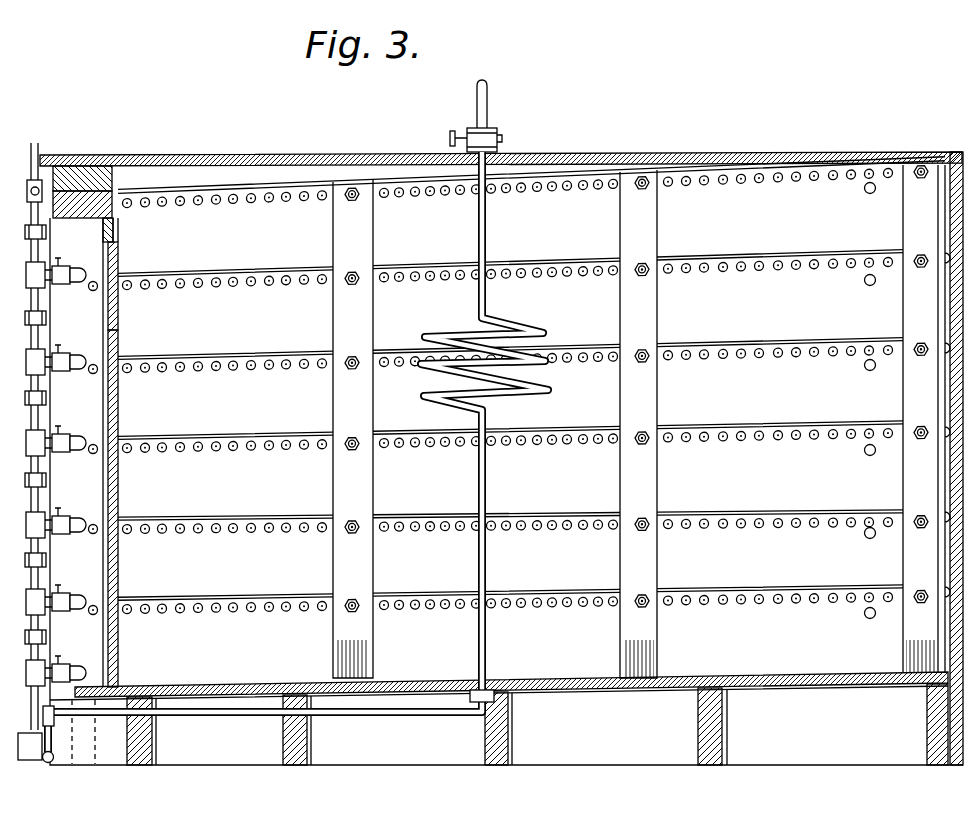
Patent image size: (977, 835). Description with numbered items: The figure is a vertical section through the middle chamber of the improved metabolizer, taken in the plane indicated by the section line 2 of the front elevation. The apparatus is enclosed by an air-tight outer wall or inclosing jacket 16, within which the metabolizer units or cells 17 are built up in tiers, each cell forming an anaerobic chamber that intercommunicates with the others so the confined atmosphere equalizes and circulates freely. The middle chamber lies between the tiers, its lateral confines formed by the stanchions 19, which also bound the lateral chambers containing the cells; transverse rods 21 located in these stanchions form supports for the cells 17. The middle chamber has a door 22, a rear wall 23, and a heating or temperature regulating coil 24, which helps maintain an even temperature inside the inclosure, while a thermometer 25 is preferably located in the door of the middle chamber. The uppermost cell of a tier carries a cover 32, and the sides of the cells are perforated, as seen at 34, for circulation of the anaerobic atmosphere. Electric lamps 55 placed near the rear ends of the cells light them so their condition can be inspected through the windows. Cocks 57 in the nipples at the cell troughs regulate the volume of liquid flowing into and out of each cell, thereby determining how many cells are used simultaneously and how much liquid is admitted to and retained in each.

The supply pipe 2 is at (29, 433).
The inclosing jacket 16 is at (694, 148).
The metabolizer units 17 is at (680, 244).
The stanchions 19 is at (335, 313).
The transverse rods 21 is at (352, 203).
The door 22 is at (112, 407).
The rear wall 23 is at (945, 392).
The heating or temperature regulating coil 24 is at (541, 333).
The thermometer 25 is at (118, 315).
The cover 32 is at (531, 175).
The perforations 34 is at (795, 184).
The electric lamps 55 is at (867, 193).
The cocks 57 is at (61, 268).